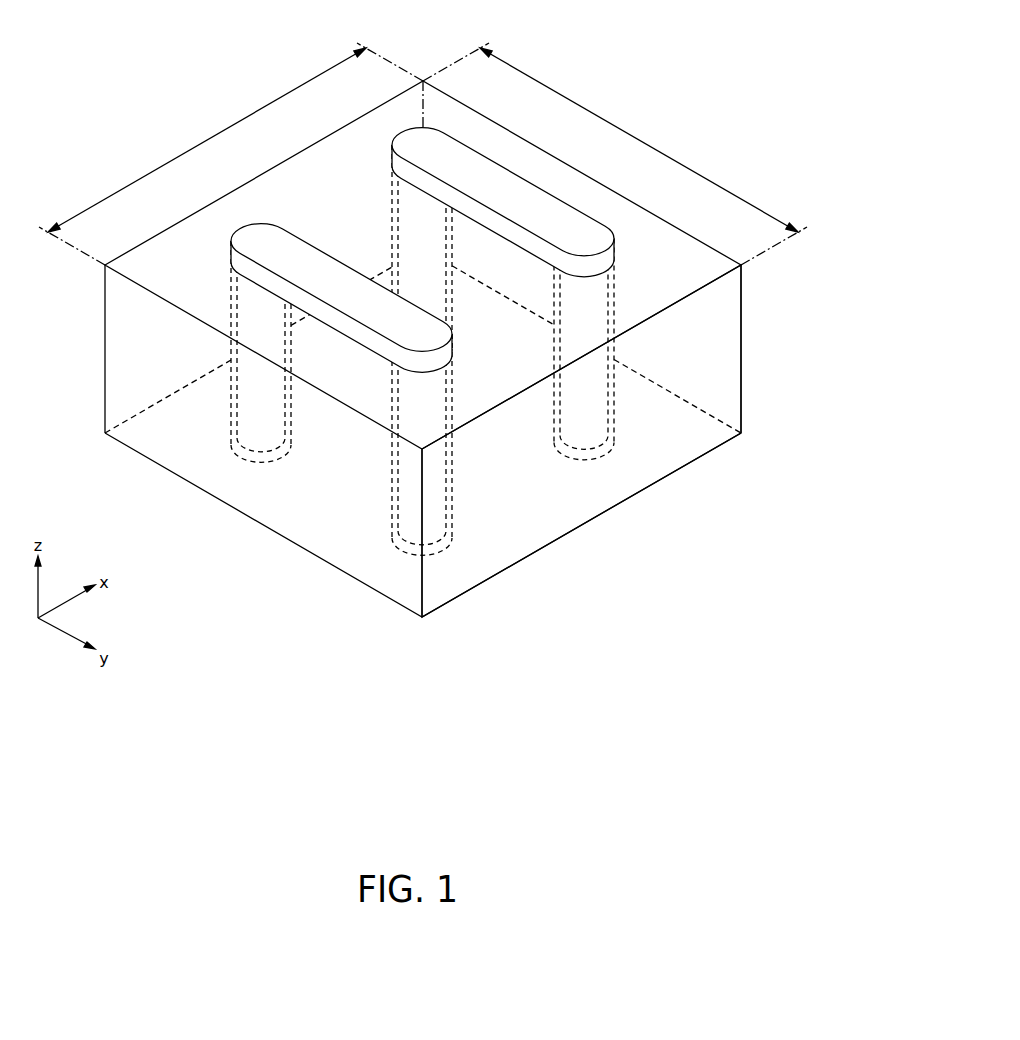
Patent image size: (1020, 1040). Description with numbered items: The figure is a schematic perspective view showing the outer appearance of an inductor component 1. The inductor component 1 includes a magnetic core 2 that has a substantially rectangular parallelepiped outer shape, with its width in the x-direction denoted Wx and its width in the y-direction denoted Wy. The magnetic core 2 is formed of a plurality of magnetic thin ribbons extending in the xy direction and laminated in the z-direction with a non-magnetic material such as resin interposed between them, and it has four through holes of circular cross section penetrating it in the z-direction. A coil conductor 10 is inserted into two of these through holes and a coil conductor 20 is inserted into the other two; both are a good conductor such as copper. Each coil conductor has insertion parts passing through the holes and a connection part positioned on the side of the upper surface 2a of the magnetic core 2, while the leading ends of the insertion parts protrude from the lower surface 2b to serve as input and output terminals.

The inductor component 1 is at (423, 308).
The magnetic core 2 is at (718, 350).
The upper surface 2a is at (662, 245).
The lower surface 2b is at (653, 445).
The coil conductor 10 is at (485, 180).
The coil conductor 20 is at (272, 238).